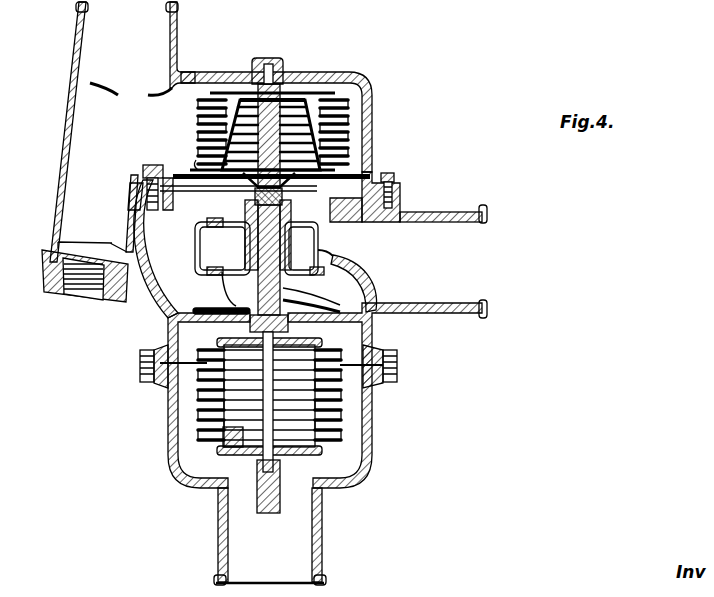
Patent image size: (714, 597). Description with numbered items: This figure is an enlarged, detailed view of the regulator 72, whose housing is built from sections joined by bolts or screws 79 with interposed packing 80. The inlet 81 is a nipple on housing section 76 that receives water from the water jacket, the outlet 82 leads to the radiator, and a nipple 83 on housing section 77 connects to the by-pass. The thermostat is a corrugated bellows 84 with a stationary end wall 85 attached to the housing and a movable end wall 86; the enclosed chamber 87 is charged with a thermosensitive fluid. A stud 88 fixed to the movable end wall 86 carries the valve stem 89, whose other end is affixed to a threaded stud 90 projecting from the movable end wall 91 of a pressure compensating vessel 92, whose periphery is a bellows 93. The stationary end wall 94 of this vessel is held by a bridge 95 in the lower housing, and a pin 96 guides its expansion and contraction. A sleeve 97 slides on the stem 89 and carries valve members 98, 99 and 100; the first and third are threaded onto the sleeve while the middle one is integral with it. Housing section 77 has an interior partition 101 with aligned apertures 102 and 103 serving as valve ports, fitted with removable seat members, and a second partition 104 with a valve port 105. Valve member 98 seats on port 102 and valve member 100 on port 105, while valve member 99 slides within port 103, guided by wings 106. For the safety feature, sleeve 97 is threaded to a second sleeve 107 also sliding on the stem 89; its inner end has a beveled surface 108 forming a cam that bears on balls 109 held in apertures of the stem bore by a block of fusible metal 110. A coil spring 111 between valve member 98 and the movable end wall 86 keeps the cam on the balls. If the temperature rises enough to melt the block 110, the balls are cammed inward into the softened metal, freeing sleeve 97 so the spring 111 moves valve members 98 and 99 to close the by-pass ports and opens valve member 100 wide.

The valve assembly 72 is at (405, 5).
The housing section 76 is at (368, 122).
The housing section 77 is at (387, 217).
The bolts or screws 79 is at (394, 180).
The packing 80 is at (374, 180).
The inlet 81 is at (157, 47).
The outlet 82 is at (312, 541).
The nipple 83 is at (473, 273).
The bellows 84 is at (336, 117).
The stationary end wall 85 is at (306, 110).
The movable end wall 86 is at (200, 125).
The chamber 87 is at (292, 90).
The stud 88 is at (271, 104).
The valve stem 89 is at (292, 249).
The threaded stud 90 is at (280, 327).
The movable end wall 91 is at (320, 344).
The pressure compensating vessel 92 is at (200, 420).
The bellows 93 is at (197, 393).
The stationary end wall 94 is at (300, 450).
The bridge 95 is at (245, 465).
The pin 96 is at (270, 400).
The sleeve 97 is at (286, 216).
The valve member 98 is at (247, 185).
The valve member 99 is at (200, 268).
The valve member 100 is at (236, 305).
The interior partition 101 is at (197, 229).
The aperture 102 is at (306, 222).
The aperture 103 is at (340, 262).
The second partition 104 is at (371, 296).
The valve port 105 is at (288, 300).
The wings 106 is at (243, 316).
The sleeve 107 is at (250, 188).
The beveled surface 108 is at (253, 205).
The balls 109 is at (300, 177).
The block of fusible metal 110 is at (268, 262).
The coil spring 111 is at (195, 152).